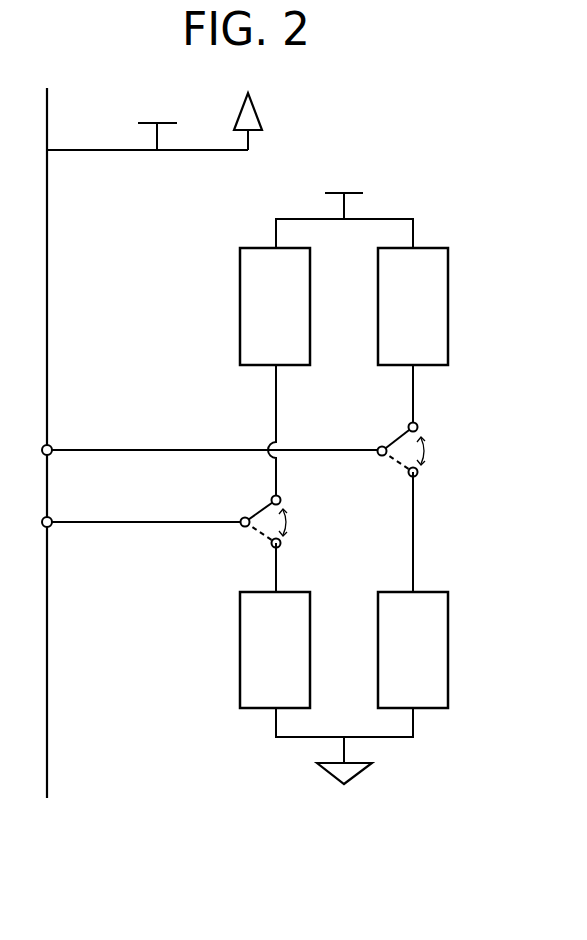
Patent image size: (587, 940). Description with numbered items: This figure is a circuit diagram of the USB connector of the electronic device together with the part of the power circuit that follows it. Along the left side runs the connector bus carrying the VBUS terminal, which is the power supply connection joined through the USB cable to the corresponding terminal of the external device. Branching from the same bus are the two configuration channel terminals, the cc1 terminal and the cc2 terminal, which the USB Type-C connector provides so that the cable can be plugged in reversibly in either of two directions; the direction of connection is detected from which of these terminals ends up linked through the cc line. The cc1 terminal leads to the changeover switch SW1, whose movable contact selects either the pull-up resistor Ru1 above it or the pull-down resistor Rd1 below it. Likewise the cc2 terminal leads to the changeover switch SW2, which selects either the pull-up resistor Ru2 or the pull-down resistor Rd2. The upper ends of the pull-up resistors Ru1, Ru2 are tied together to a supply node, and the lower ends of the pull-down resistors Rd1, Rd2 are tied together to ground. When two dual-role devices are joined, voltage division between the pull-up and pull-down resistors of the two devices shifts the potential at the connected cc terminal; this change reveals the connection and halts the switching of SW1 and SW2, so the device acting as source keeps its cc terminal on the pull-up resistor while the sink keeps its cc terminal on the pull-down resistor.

The VBUS terminal VBUS is at (154, 443).
The cc1 terminal cc1 is at (48, 450).
The cc2 terminal cc2 is at (48, 522).
The changeover switch SW1 is at (393, 466).
The changeover switch SW2 is at (255, 538).
The pull-up resistor Ru1 is at (413, 306).
The pull-up resistor Ru2 is at (275, 306).
The pull-down resistor Rd1 is at (413, 650).
The pull-down resistor Rd2 is at (275, 650).